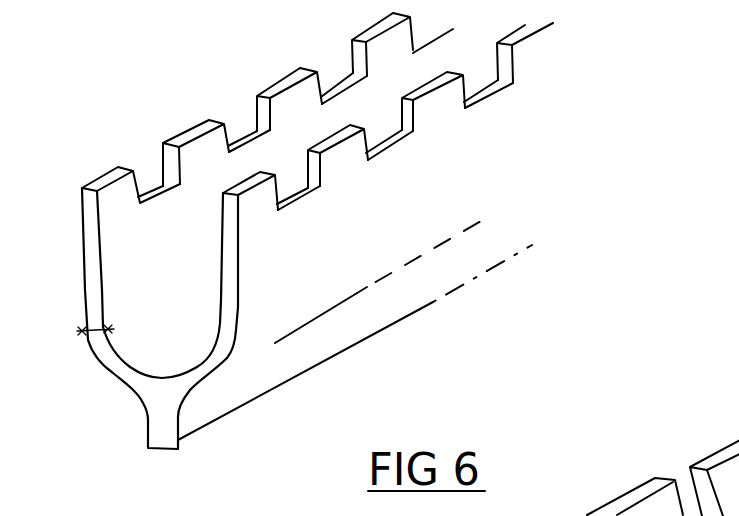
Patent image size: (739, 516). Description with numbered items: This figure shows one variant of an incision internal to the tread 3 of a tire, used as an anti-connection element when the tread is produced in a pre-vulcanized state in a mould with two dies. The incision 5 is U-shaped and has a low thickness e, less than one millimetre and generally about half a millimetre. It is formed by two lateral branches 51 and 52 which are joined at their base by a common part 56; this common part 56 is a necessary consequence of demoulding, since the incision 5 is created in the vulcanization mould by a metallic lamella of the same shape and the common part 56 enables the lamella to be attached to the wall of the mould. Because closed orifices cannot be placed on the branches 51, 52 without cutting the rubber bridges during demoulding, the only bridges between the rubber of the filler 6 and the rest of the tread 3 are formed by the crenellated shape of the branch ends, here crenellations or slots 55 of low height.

The tread 3 is at (362, 370).
The incision 5 is at (388, 220).
The filler 6 is at (190, 283).
The branch 51 is at (95, 233).
The branch 52 is at (230, 255).
The crenellations 55 is at (482, 65).
The common part 56 is at (163, 420).
The thickness of incision e is at (85, 318).